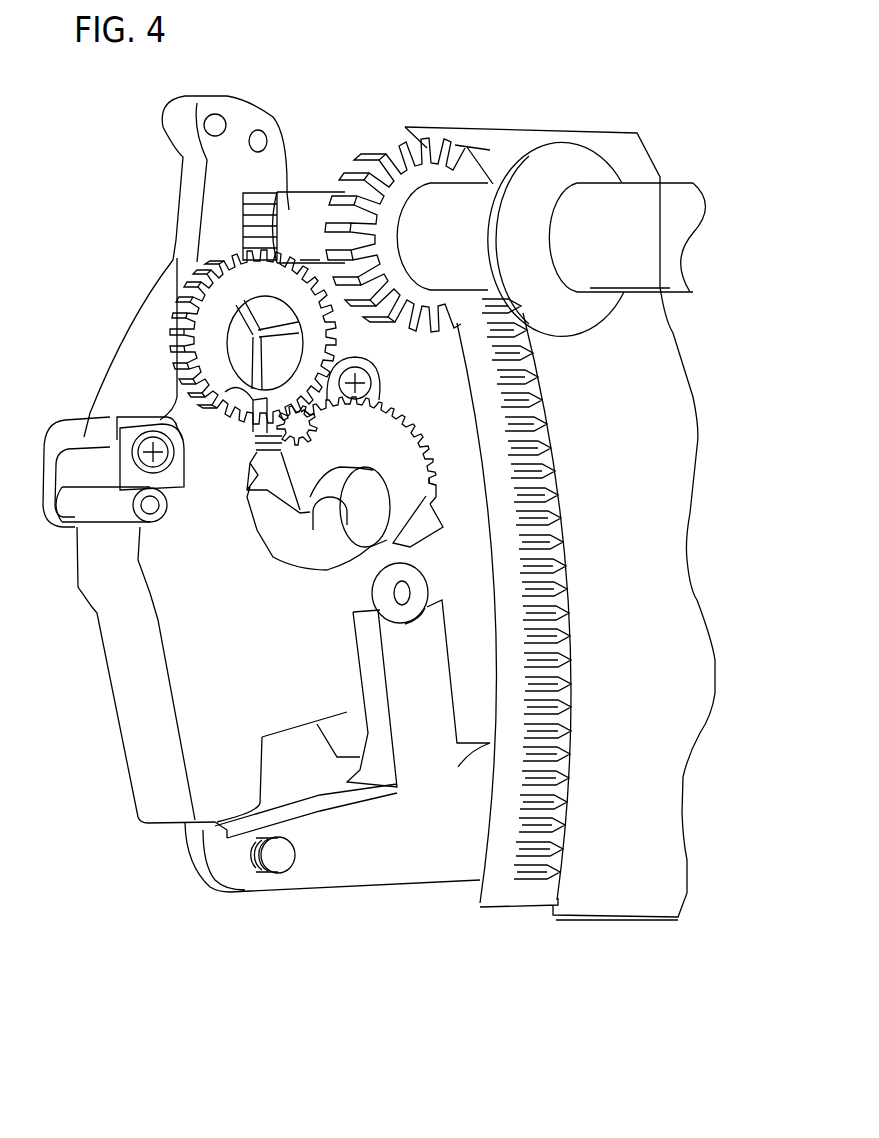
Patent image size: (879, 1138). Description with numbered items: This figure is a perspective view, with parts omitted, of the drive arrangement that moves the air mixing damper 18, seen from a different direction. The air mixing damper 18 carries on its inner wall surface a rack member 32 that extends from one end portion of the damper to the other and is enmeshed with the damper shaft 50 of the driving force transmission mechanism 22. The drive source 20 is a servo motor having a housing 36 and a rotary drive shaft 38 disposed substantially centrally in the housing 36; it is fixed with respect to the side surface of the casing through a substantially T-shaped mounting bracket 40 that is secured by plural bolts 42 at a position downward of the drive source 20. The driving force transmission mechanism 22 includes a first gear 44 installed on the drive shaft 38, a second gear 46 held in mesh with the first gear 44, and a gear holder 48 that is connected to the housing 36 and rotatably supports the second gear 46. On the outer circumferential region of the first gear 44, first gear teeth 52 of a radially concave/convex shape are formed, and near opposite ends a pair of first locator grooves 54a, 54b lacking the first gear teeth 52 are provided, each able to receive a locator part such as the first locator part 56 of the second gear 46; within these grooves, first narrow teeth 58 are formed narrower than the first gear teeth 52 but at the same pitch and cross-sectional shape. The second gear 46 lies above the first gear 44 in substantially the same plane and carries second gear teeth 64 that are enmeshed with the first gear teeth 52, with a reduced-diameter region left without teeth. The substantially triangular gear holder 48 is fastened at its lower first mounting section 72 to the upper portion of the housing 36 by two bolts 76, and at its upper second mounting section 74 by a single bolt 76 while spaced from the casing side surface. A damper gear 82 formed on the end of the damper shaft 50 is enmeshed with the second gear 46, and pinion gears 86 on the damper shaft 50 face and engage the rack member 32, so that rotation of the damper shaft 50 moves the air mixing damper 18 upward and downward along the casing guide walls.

The air mixing damper 18 is at (680, 512).
The drive source 20 is at (103, 707).
The driving force transmission mechanism 22 is at (272, 102).
The rack member 32 is at (580, 553).
The housing 36 is at (150, 742).
The drive shaft 38 is at (332, 515).
The mounting bracket 40 is at (370, 860).
The bolts 42 is at (280, 863).
The first gear 44 is at (264, 515).
The second gear 46 is at (198, 328).
The gear holder 48 is at (111, 313).
The damper shaft 50 is at (674, 175).
The first gear teeth 52 is at (398, 413).
The first locator groove 54a is at (262, 440).
The first locator groove 54b is at (437, 485).
The first locator part 56 is at (312, 425).
The first narrow teeth 58 is at (313, 430).
The second gear teeth 64 is at (186, 290).
The first mounting section 72 is at (56, 455).
The second mounting section 74 is at (217, 118).
The bolts 76 is at (365, 382).
The damper gear 82 is at (243, 212).
The pinion gears 86 is at (443, 148).